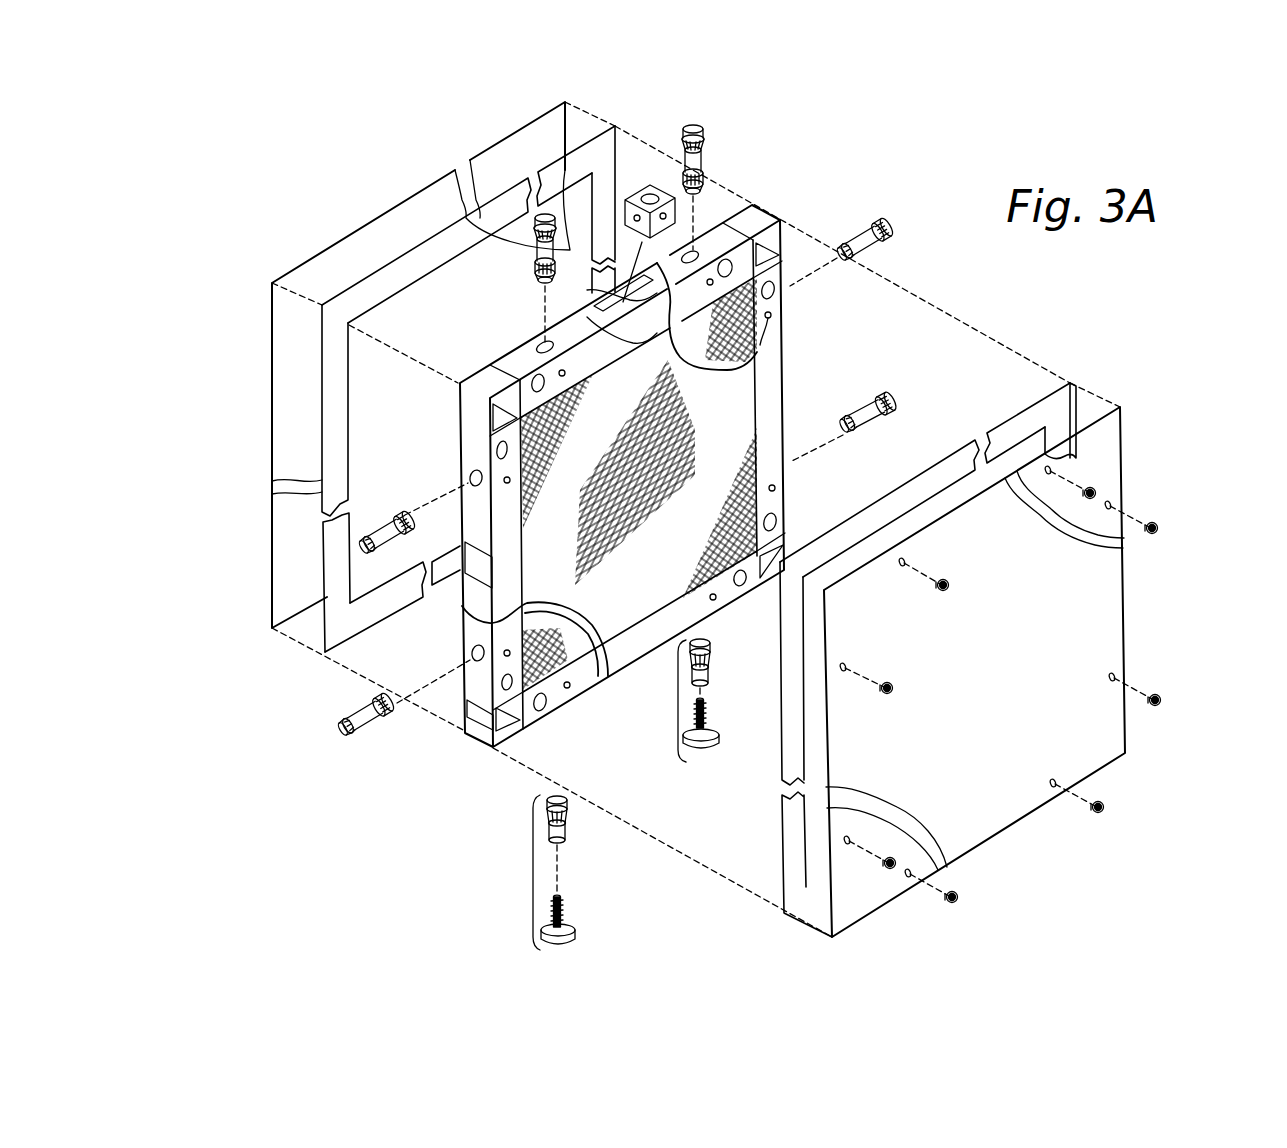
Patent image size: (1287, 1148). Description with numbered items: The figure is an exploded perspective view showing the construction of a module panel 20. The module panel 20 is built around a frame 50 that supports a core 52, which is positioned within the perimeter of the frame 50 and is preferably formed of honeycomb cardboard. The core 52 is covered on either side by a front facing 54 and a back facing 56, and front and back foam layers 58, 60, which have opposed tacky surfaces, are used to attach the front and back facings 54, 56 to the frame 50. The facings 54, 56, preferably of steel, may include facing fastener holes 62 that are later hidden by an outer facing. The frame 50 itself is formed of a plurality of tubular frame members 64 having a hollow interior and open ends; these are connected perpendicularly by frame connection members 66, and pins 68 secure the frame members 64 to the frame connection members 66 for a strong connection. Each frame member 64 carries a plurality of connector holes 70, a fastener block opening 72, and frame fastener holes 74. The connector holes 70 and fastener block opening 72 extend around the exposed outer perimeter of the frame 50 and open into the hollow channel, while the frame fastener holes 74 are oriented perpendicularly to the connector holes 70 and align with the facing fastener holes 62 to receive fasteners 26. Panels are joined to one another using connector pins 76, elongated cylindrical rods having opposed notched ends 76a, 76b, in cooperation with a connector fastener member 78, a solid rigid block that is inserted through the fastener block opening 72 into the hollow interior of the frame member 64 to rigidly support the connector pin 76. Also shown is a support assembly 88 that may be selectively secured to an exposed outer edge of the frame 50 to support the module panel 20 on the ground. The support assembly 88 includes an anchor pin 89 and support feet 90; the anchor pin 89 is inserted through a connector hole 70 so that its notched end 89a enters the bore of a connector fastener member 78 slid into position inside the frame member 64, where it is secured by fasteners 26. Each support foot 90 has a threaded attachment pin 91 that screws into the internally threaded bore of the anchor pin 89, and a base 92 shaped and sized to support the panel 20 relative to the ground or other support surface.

The module panel 20 is at (966, 120).
The fasteners 26 is at (1156, 527).
The frame 50 is at (797, 394).
The core 52 is at (648, 592).
The front facing 54 is at (1150, 414).
The back facing 56 is at (546, 106).
The front foam layer 58 is at (1076, 380).
The back foam layer 60 is at (622, 130).
The facing fastener holes 62 is at (1053, 470).
The frame members 64 is at (507, 342).
The frame connection members 66 is at (772, 212).
The pins 68 is at (780, 240).
The connector holes 70 is at (695, 252).
The fastener block opening 72 is at (630, 349).
The frame fastener holes 74 is at (773, 485).
The connector pins 76 is at (706, 148).
The notched end 76a is at (851, 262).
The notched end 76b is at (898, 236).
The connector fastener member 78 is at (653, 183).
The support assembly 88 is at (676, 706).
The anchor pin 89 is at (568, 828).
The notched end 89a is at (569, 806).
The support feet 90 is at (568, 898).
The threaded attachment pin 91 is at (565, 912).
The base 92 is at (578, 932).